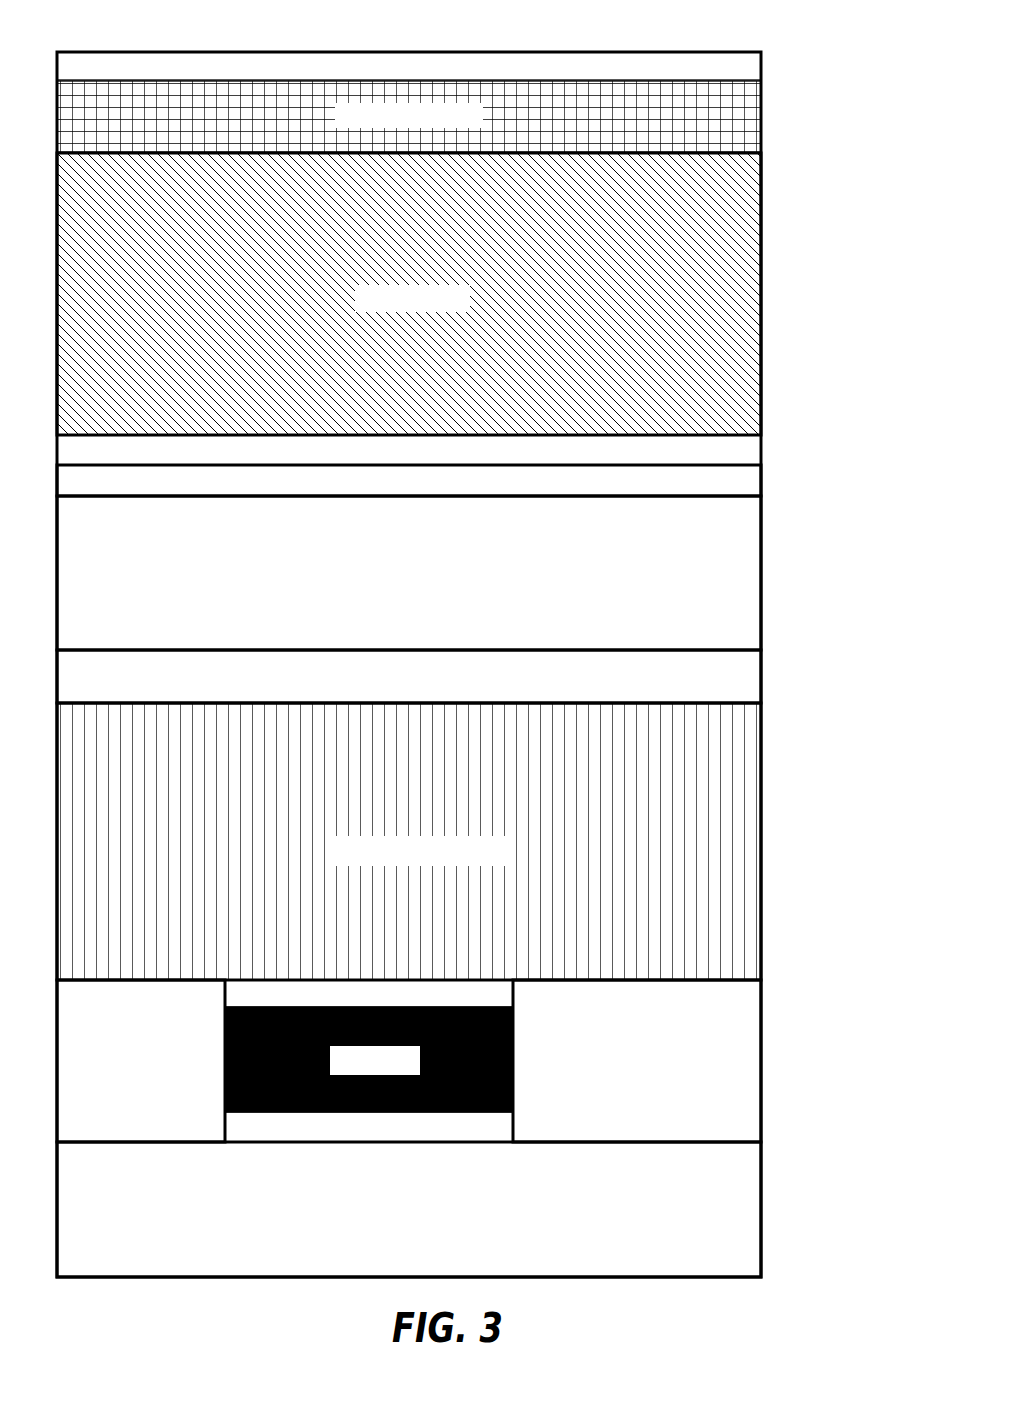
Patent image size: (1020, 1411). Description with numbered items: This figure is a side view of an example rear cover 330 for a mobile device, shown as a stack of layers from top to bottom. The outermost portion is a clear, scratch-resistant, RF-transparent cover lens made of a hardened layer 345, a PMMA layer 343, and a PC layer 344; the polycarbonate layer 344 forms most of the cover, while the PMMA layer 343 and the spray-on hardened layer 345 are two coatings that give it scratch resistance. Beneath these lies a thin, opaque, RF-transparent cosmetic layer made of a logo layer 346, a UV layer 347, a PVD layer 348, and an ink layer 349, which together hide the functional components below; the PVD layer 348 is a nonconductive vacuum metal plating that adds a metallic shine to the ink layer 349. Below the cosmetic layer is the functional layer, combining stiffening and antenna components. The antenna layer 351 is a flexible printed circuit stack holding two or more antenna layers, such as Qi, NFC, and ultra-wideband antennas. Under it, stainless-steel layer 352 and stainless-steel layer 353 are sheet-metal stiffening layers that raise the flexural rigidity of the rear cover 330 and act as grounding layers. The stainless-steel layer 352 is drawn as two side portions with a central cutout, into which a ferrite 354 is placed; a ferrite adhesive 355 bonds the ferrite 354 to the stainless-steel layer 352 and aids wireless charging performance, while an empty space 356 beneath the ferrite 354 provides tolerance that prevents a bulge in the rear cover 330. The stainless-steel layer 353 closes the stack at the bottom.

The rear cover 330 is at (430, 33).
The PMMA layer 343 is at (742, 128).
The PC (polycarbonate) layer 344 is at (745, 317).
The hardened layer 345 is at (742, 65).
The logo layer 346 is at (740, 449).
The UV layer 347 is at (740, 479).
The PVD layer 348 is at (740, 575).
The ink layer 349 is at (745, 677).
The antenna layer 351 is at (742, 862).
The stainless-steel (SUS) layer 352 is at (742, 1065).
The SUS layer 353 is at (742, 1210).
The ferrite 354 is at (513, 1032).
The ferrite adhesive 355 is at (497, 994).
The empty space 356 is at (505, 1128).